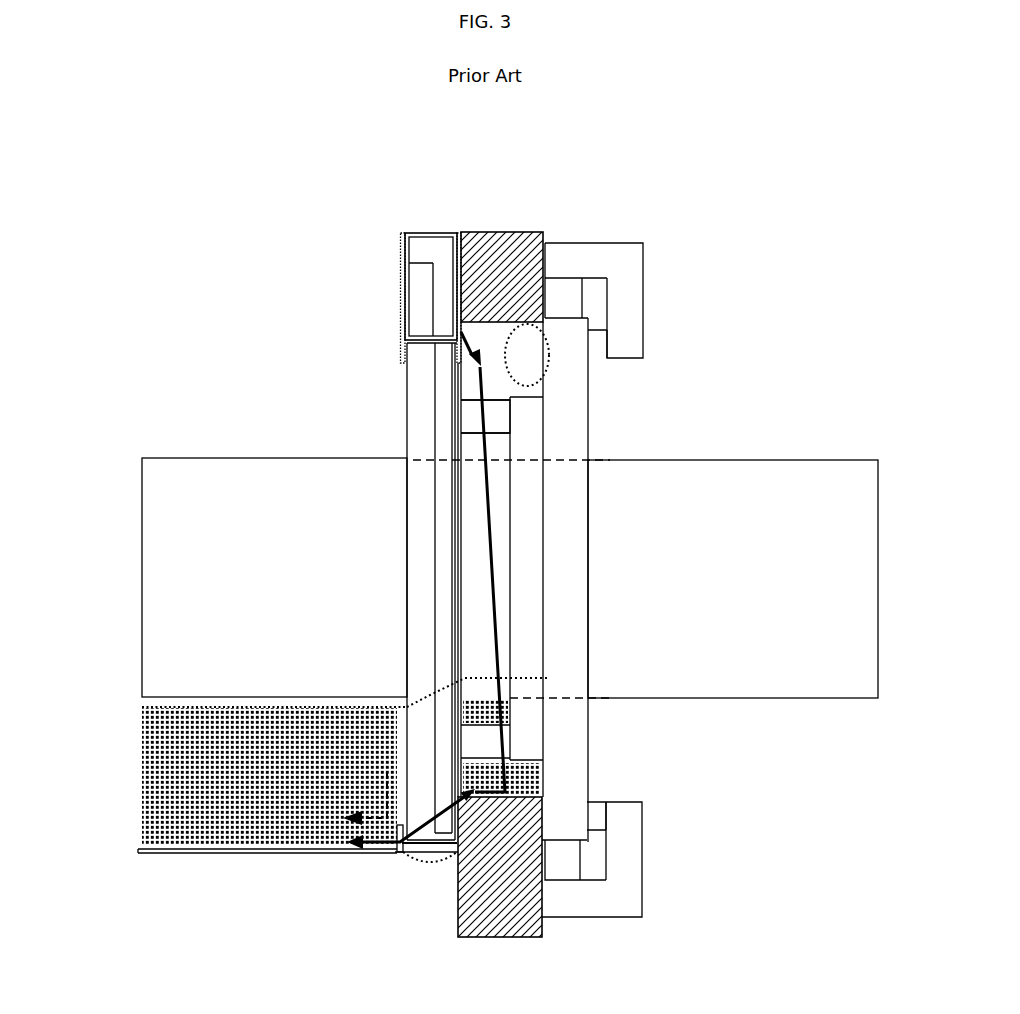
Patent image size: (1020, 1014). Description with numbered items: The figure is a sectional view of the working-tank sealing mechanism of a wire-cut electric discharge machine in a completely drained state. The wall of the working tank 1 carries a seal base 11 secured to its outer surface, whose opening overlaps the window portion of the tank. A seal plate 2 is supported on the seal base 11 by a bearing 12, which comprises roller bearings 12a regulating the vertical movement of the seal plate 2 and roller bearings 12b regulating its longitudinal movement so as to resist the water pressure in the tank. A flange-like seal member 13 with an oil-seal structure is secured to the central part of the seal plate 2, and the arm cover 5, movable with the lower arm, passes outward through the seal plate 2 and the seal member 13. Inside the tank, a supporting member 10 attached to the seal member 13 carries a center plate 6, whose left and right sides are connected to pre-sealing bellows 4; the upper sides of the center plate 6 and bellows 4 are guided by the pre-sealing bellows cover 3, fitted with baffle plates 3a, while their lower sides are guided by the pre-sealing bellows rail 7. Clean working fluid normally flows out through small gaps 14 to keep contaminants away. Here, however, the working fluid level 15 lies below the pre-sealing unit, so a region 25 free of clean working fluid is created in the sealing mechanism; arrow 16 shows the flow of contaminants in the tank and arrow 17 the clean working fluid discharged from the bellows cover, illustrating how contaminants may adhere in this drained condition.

The working tank 1 is at (205, 858).
The seal plate 2 is at (563, 525).
The pre-sealing bellows cover 3 is at (425, 232).
The baffle plates 3a is at (404, 288).
The pre-sealing bellows 4 is at (422, 517).
The arm cover 5 is at (205, 465).
The center plate 6 is at (447, 733).
The pre-sealing bellows rail 7 is at (397, 853).
The supporting member 10 is at (485, 418).
The seal base 11 is at (500, 262).
The bearing 12 is at (623, 263).
The roller bearings 12a is at (563, 292).
The roller bearings 12b is at (597, 338).
The seal member 13 is at (540, 735).
The small gaps 14 is at (437, 858).
The working fluid level 15 is at (133, 707).
The arrow indicating flow of contaminants 16 is at (347, 810).
The arrow indicating flow of clean working fluid 17 is at (347, 840).
The region free of clean working fluid 25 is at (532, 343).